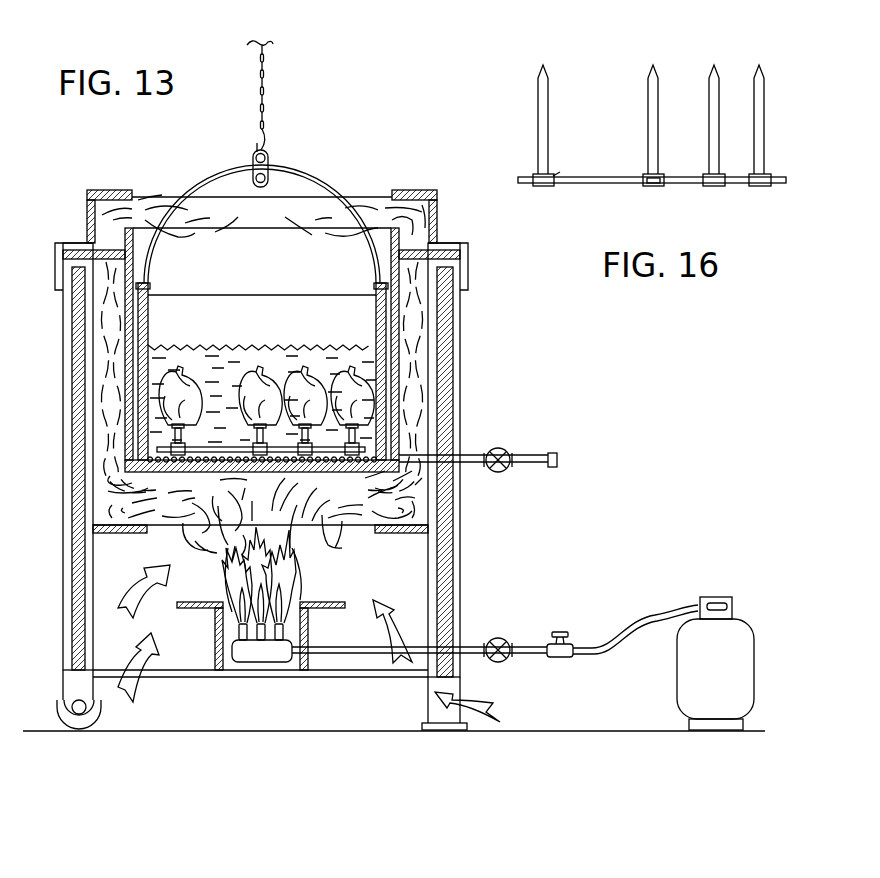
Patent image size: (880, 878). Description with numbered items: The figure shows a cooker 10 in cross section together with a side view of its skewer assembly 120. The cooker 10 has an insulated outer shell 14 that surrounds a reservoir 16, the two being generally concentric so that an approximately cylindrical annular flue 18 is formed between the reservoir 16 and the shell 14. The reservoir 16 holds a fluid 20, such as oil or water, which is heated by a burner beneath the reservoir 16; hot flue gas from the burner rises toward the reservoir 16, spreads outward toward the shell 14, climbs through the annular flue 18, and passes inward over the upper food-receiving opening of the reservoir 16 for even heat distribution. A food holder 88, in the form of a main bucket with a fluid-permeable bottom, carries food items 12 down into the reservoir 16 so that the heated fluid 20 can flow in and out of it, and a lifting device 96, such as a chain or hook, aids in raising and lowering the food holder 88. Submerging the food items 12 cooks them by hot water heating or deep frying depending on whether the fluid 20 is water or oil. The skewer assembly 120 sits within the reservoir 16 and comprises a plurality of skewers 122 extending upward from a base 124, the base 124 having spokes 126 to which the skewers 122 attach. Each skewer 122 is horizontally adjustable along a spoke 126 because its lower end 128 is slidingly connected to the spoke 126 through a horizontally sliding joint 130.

In FIG. 13, the cooker 10 is at (488, 403).
In FIG. 13, the food items 12 is at (303, 376).
In FIG. 13, the insulated outer shell 14 is at (63, 510).
In FIG. 13, the reservoir 16 is at (125, 299).
In FIG. 13, the annular flue 18 is at (103, 372).
In FIG. 13, the fluid 20 is at (263, 347).
In FIG. 13, the food holder 88 is at (380, 330).
In FIG. 13, the lifting device 96 is at (270, 110).
In FIG. 13, the skewer assembly 120 is at (218, 446).
In FIG. 16, the skewer assembly 120 is at (524, 96).
In FIG. 16, the skewers 122 is at (708, 127).
In FIG. 16, the base 124 is at (735, 184).
In FIG. 16, the spokes 126 is at (596, 184).
In FIG. 16, the lower end 128 is at (643, 174).
In FIG. 16, the horizontally sliding joint 130 is at (555, 177).